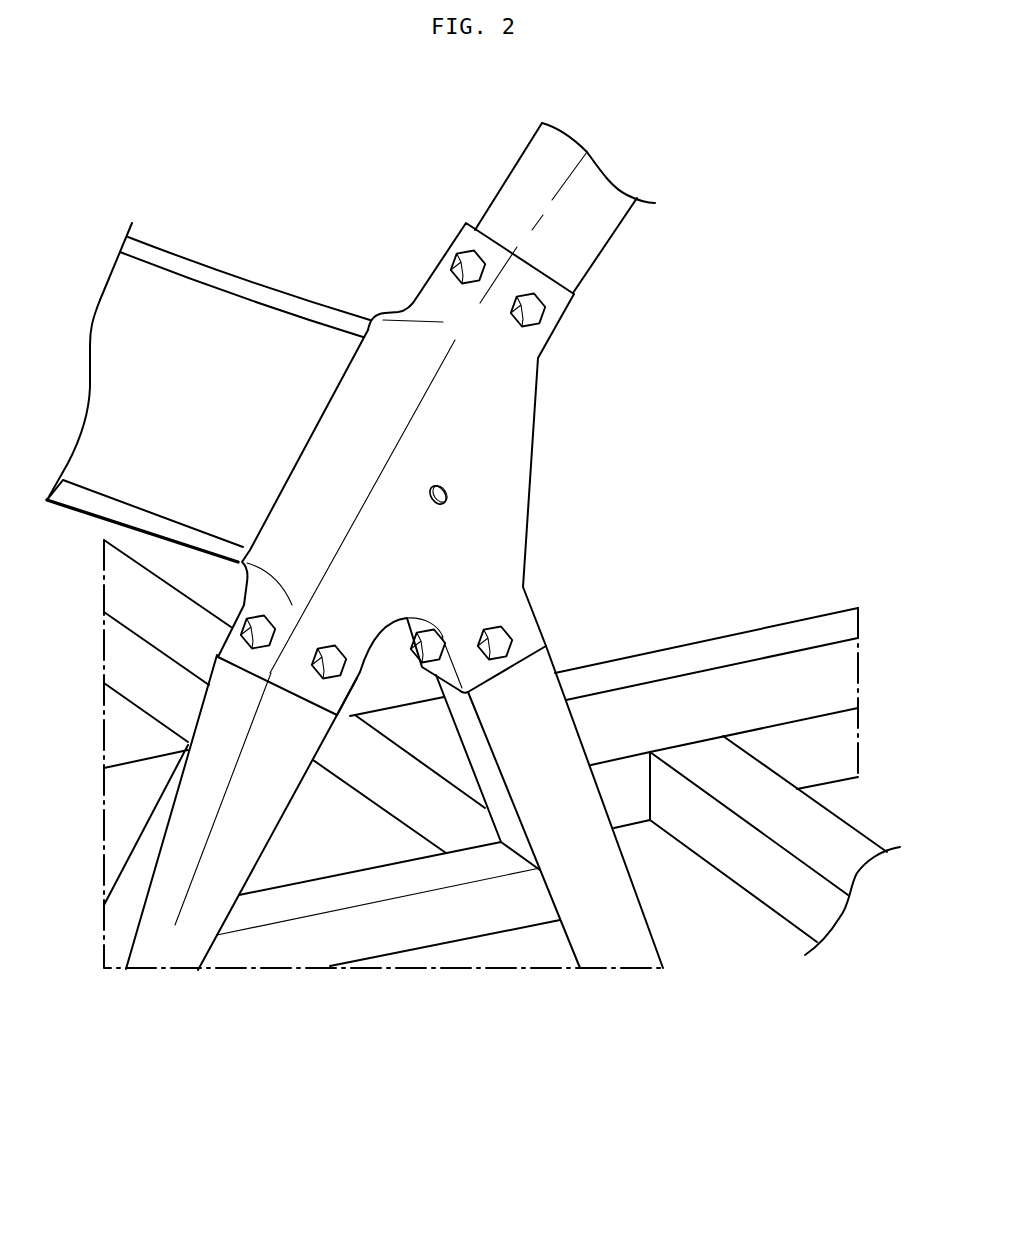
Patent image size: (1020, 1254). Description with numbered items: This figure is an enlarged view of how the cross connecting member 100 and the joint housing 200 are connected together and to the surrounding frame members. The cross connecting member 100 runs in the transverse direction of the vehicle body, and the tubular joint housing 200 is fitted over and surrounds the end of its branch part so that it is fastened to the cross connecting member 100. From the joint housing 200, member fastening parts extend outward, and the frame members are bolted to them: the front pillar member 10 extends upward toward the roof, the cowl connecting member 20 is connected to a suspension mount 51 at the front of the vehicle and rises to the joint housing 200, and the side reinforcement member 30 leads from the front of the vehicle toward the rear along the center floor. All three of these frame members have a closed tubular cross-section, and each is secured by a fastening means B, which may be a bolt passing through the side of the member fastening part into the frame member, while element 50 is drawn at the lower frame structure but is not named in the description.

The cross connecting member 100 is at (183, 233).
The front pillar member 10 is at (523, 198).
The joint housing 200 is at (505, 418).
The fastening means B is at (533, 310).
The cowl connecting member 20 is at (178, 922).
The side reinforcement member 30 is at (607, 928).
The cross bar 50 is at (399, 928).
The suspension mount 51 is at (303, 843).